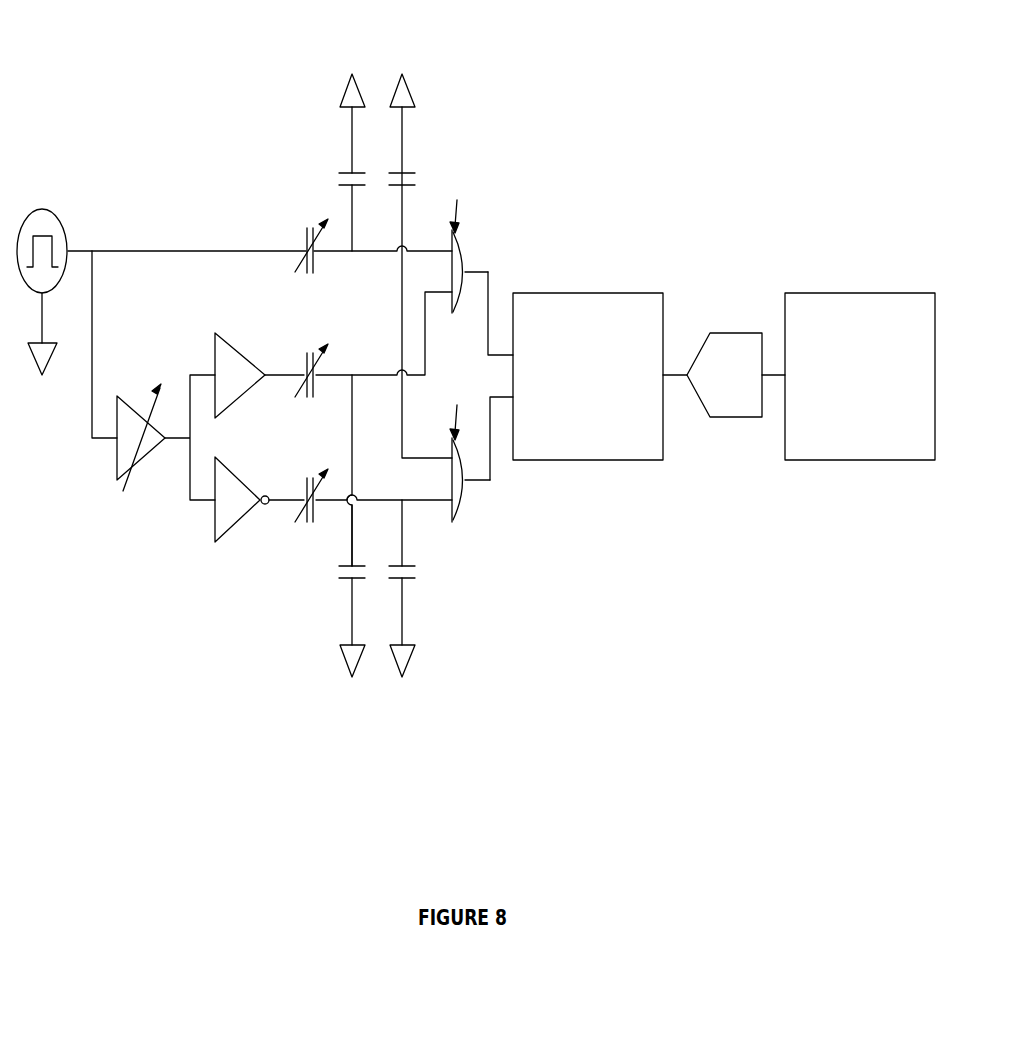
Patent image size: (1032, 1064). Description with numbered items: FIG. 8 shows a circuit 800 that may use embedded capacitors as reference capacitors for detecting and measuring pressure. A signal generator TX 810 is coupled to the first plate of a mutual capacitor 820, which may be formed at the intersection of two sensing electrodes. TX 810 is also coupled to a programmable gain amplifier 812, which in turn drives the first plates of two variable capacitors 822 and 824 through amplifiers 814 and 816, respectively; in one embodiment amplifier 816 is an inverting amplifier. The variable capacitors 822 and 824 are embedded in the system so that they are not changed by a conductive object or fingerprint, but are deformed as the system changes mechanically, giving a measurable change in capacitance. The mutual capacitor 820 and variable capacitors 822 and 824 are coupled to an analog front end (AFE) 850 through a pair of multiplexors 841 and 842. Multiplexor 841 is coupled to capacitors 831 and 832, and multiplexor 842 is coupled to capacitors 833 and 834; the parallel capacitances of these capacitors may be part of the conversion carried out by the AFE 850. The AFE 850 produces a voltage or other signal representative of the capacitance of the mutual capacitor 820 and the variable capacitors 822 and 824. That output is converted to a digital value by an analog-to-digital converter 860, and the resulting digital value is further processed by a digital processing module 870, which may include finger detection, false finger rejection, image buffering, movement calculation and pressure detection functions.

The circuit 800 is at (822, 35).
The signal generator TX 810 is at (42, 262).
The variable gain amplifier 812 is at (141, 443).
The amplifier 814 is at (240, 375).
The amplifier 816 is at (242, 499).
The mutual capacitor 820 is at (311, 254).
The variable capacitor 822 is at (311, 386).
The variable capacitor 824 is at (311, 511).
The capacitor 831 is at (359, 162).
The capacitor 832 is at (361, 621).
The capacitor 833 is at (409, 157).
The capacitor 834 is at (411, 588).
The multiplexor 841 is at (463, 242).
The multiplexor 842 is at (463, 490).
The analog front end (AFE) 850 is at (601, 440).
The analog-to-digital converter 860 is at (724, 375).
The digital processing module 870 is at (872, 428).